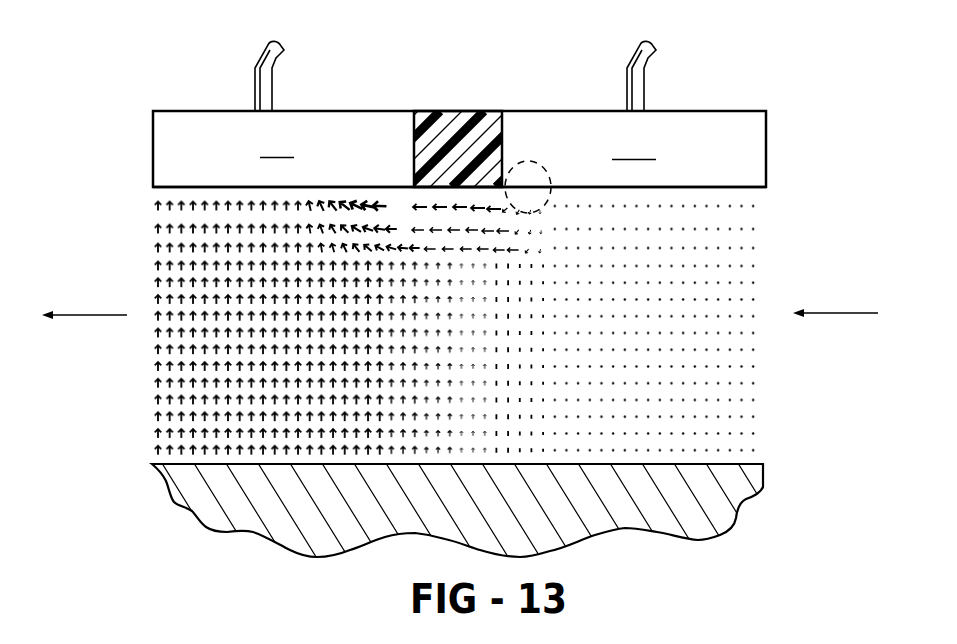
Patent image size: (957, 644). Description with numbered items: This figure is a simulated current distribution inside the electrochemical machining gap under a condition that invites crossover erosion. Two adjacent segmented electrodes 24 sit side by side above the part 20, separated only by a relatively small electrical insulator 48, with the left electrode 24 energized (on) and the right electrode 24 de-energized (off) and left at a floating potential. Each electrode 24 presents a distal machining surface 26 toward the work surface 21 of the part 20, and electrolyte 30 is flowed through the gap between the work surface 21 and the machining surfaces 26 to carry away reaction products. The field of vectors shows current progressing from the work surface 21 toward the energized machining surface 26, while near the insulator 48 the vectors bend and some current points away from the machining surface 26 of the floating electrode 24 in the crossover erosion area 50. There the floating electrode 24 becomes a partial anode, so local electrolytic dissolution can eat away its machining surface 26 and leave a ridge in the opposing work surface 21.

The anodically polarized part 20 is at (247, 540).
The work surface 21 is at (731, 463).
The electrode 24 is at (179, 123).
The machining surface 26 is at (183, 187).
The electrolyte 30 is at (103, 316).
The electrical insulator 48 is at (463, 110).
The crossover erosion area 50 is at (536, 162).